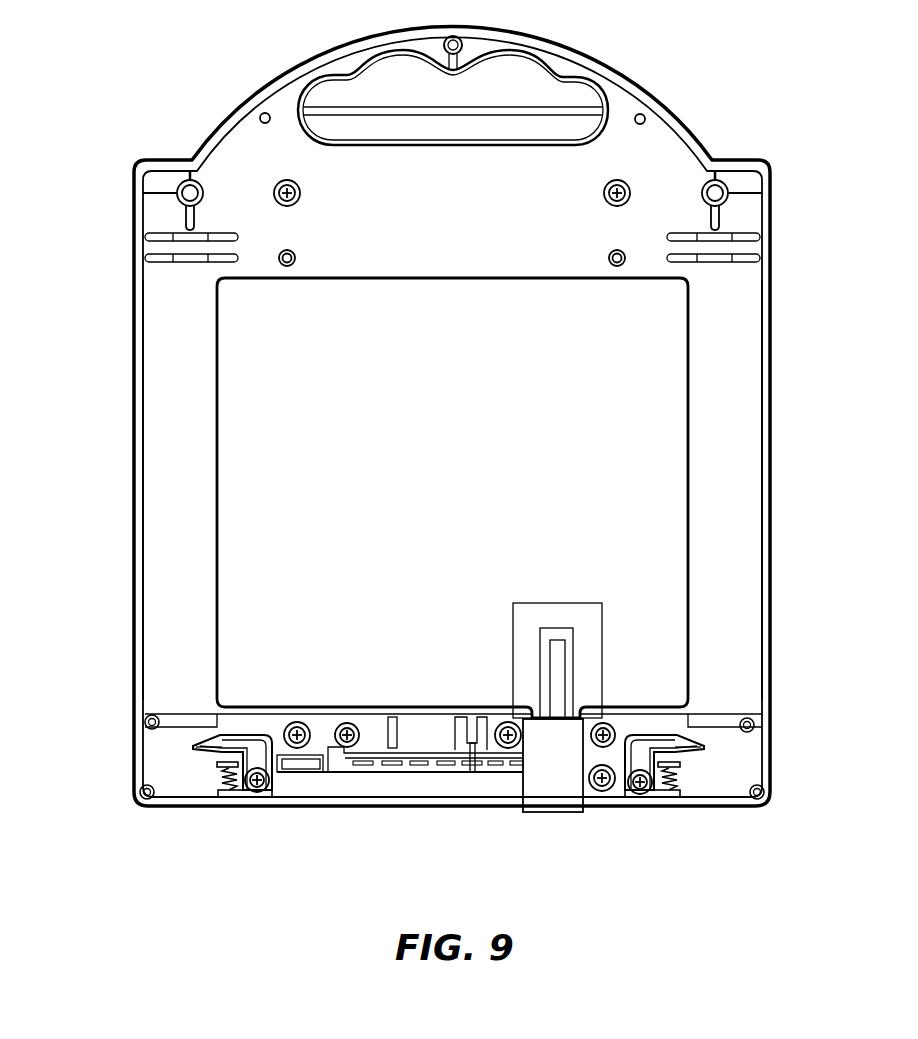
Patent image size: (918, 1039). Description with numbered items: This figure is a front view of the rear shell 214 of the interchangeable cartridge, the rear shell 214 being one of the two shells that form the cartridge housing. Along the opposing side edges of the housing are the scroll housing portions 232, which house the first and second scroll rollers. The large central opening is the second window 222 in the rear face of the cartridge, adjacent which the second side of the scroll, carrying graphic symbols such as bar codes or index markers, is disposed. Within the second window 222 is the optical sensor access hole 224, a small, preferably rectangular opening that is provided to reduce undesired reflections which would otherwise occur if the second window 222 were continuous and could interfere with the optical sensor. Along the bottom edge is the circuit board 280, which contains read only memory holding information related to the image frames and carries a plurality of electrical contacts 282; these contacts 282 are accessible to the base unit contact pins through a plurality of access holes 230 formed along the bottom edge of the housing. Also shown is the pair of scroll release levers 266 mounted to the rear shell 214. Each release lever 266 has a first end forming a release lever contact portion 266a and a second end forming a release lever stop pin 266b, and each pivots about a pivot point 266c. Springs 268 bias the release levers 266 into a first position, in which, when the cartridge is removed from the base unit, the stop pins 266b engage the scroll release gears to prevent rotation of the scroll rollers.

The rear shell 214 is at (671, 103).
The second window 222 is at (474, 429).
The optical sensor access hole 224 is at (547, 672).
The access holes 230 is at (403, 772).
The scroll housing portions 232 is at (155, 458).
The scroll release lever 266 is at (233, 735).
The release lever contact portion 266a is at (237, 807).
The release lever stop pin 266b is at (212, 740).
The pivot point 266c is at (258, 793).
The spring 268 is at (217, 775).
The circuit board 280 is at (432, 757).
The electrical contacts 282 is at (345, 773).